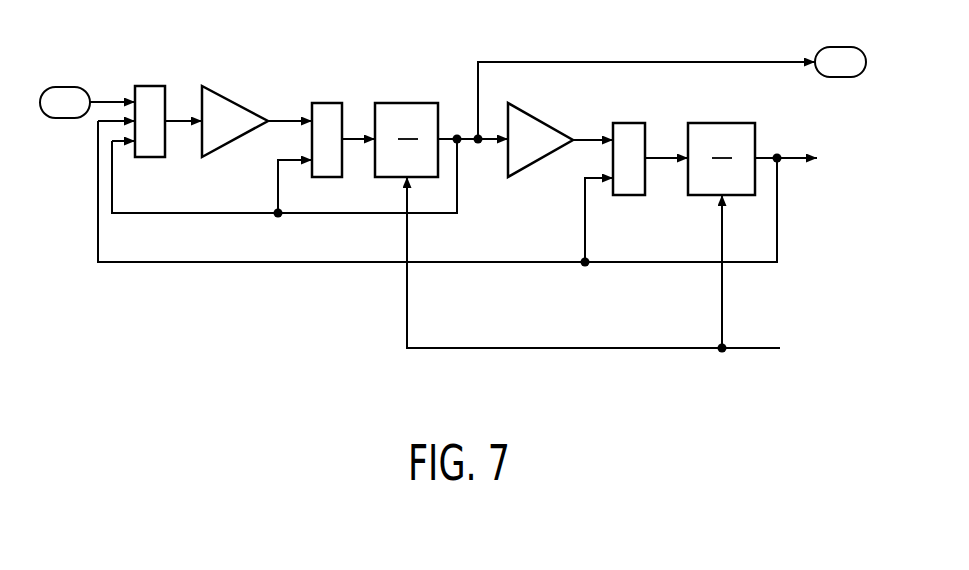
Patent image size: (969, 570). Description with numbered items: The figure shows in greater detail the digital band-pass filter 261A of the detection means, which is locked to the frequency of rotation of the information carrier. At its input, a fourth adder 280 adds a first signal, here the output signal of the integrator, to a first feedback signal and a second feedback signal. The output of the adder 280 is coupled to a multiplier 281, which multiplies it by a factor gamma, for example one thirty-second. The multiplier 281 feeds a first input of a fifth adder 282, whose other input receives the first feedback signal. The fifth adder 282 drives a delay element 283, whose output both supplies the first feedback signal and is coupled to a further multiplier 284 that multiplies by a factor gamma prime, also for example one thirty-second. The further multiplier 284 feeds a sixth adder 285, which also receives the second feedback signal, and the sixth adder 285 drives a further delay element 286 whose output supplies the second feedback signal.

The digital band-pass filter 261A is at (237, 364).
The fourth adder 280 is at (151, 78).
The multiplier 281 is at (222, 84).
The fifth adder 282 is at (326, 99).
The delay element 283 is at (422, 99).
The further multiplier 284 is at (527, 113).
The sixth adder 285 is at (632, 120).
The further delay element 286 is at (733, 120).